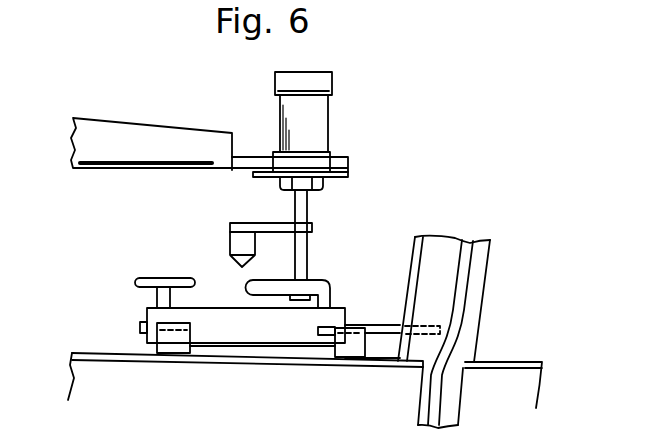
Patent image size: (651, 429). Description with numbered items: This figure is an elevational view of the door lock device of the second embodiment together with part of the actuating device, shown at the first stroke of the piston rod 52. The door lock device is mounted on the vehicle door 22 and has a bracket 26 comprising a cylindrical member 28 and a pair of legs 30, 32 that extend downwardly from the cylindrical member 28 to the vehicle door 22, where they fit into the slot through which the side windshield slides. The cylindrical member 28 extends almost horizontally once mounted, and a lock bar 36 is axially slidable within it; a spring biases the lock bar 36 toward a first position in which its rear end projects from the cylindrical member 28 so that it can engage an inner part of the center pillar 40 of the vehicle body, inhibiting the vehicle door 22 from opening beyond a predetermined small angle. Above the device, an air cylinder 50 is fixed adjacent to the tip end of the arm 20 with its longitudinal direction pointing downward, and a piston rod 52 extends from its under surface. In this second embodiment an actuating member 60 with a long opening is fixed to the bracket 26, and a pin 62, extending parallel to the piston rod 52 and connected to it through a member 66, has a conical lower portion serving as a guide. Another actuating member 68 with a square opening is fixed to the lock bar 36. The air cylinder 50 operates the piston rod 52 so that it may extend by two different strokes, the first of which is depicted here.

The arm 20 is at (147, 138).
The vehicle door 22 is at (93, 378).
The bracket 26 is at (228, 328).
The cylindrical member 28 is at (240, 335).
The leg 30 is at (345, 350).
The leg 32 is at (170, 347).
The lock bar 36 is at (385, 327).
The center pillar 40 is at (477, 248).
The air cylinder 50 is at (313, 121).
The piston rod 52 is at (302, 259).
The actuating member 60 is at (143, 278).
The pin 62 is at (228, 246).
The member 66 is at (281, 222).
The actuating member 68 is at (278, 290).